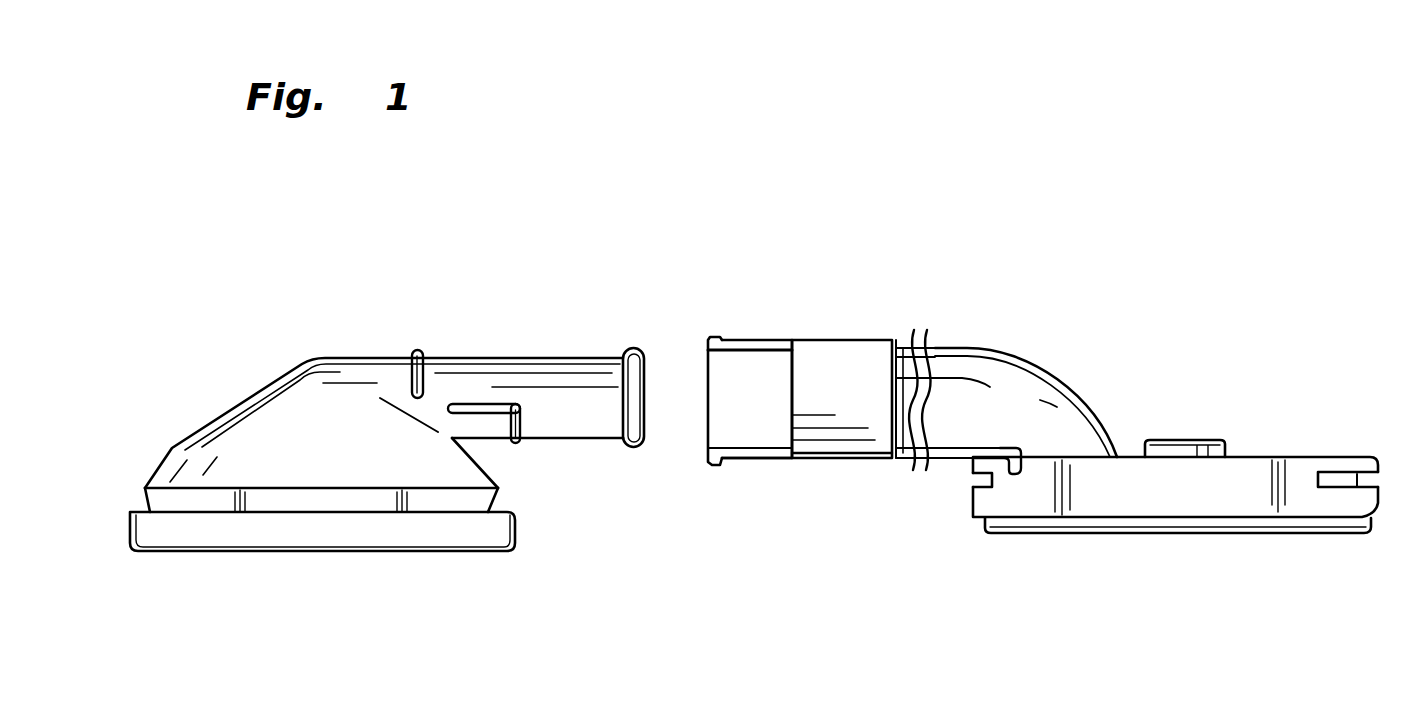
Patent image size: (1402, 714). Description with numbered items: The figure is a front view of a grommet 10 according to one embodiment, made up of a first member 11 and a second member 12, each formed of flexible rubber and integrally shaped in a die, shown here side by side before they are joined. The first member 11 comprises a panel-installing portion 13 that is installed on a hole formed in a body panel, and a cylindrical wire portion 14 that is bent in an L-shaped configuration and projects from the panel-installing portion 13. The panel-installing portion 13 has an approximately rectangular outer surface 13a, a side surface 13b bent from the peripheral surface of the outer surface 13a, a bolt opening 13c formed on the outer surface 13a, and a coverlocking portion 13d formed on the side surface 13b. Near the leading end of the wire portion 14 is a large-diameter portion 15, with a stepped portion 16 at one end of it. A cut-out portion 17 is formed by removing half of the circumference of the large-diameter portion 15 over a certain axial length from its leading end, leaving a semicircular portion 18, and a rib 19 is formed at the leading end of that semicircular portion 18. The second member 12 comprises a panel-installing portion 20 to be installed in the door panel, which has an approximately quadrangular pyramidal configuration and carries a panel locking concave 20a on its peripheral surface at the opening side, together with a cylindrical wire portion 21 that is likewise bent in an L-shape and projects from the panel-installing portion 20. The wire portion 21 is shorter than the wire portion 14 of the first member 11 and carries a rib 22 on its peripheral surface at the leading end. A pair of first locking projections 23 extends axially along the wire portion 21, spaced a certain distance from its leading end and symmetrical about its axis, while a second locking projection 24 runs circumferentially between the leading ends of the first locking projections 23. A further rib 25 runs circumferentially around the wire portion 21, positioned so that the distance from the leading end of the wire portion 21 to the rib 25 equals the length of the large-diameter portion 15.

The grommet 10 is at (808, 208).
The first member 11 is at (1004, 323).
The second member 12 is at (406, 344).
The panel-installing portion 13 is at (1273, 505).
The outer surface 13a is at (1292, 458).
The side surface 13b is at (1355, 530).
The bolt opening 13c is at (1198, 440).
The coverlocking portion 13d is at (975, 482).
The wire portion 14 is at (943, 346).
The large-diameter portion 15 is at (833, 340).
The stepped portion 16 is at (898, 340).
The cut-out portion 17 is at (778, 456).
The semicircular portion 18 is at (745, 440).
The rib 19 is at (713, 466).
The panel-installing portion 20 is at (227, 437).
The panel locking concave 20a is at (505, 520).
The wire portion 21 is at (540, 358).
The rib 22 is at (633, 445).
The first locking projections 23 is at (478, 404).
The second locking projection 24 is at (522, 428).
The rib 25 is at (380, 395).